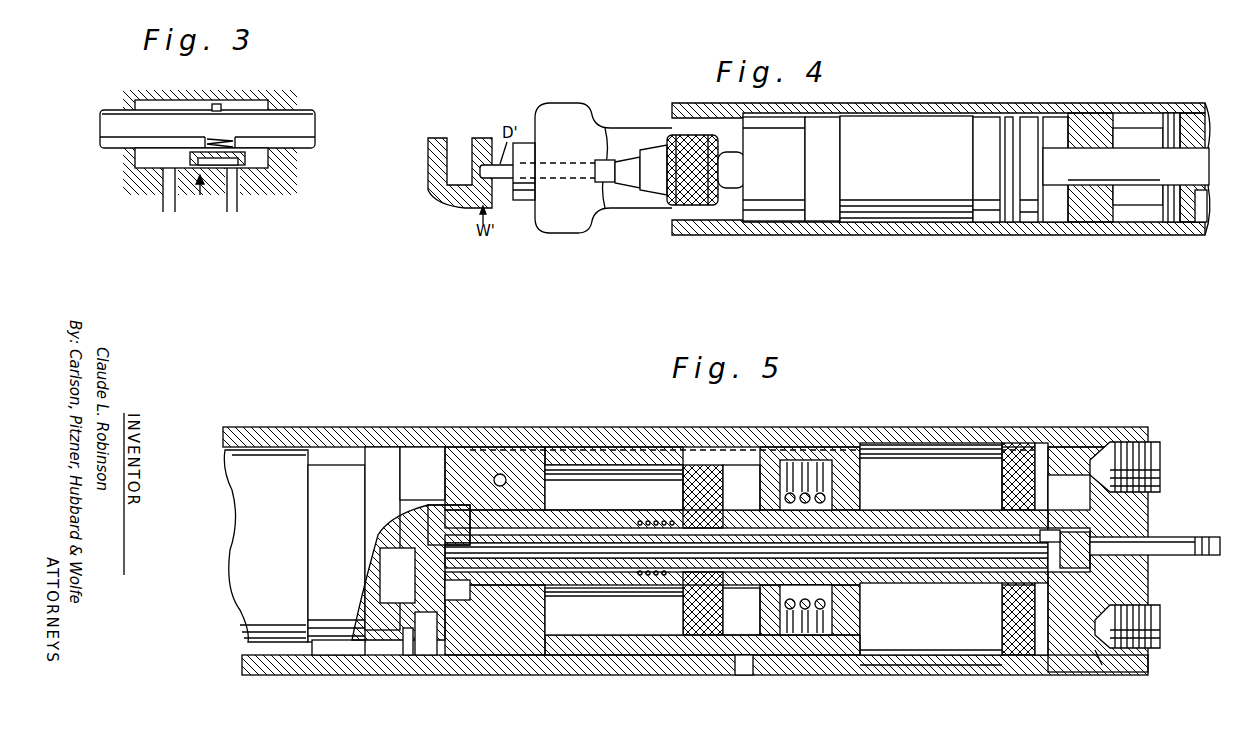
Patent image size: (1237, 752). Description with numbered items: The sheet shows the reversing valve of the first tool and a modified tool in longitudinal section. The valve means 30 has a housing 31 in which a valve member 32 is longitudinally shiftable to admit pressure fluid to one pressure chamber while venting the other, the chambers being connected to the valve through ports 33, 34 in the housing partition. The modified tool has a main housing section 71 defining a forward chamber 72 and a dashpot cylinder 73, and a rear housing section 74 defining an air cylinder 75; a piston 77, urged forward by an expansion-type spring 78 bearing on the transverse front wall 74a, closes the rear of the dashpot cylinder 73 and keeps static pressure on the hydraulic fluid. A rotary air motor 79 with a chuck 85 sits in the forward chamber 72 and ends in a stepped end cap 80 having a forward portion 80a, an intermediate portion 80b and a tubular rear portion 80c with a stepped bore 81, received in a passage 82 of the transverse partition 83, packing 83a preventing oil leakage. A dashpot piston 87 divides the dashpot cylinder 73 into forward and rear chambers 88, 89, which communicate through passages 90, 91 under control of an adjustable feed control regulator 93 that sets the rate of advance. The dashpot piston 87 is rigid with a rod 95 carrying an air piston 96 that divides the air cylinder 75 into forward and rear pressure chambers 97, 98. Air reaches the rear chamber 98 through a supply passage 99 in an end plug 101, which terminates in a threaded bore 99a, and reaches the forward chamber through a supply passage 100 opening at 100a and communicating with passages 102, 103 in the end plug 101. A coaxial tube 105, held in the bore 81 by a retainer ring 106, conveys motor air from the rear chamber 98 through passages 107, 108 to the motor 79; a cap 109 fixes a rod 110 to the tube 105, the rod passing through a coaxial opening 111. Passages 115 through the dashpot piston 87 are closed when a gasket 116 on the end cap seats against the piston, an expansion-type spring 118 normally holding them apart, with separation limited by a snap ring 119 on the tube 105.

In FIG. 3, the valve means 30 is at (195, 100).
In FIG. 3, the housing 31 is at (247, 102).
In FIG. 3, the valve member 32 is at (245, 160).
In FIG. 3, the port 33 is at (163, 200).
In FIG. 3, the port 34 is at (237, 200).
In FIG. 4, the main housing section 71 is at (966, 108).
In FIG. 5, the main housing section 71 is at (422, 442).
In FIG. 4, the forward chamber 72 is at (1062, 116).
In FIG. 5, the forward chamber 72 is at (340, 452).
In FIG. 4, the dashpot cylinder 73 is at (1183, 117).
In FIG. 5, the dashpot cylinder 73 is at (615, 635).
In FIG. 5, the rear housing section 74 is at (988, 430).
In FIG. 5, the transverse front wall 74a is at (864, 484).
In FIG. 5, the air cylinder 75 is at (943, 444).
In FIG. 5, the piston 77 is at (760, 482).
In FIG. 5, the expansion-type spring 78 is at (826, 484).
In FIG. 4, the rotary air motor 79 is at (887, 118).
In FIG. 5, the rotary air motor 79 is at (267, 455).
In FIG. 4, the end cap 80 is at (1011, 220).
In FIG. 5, the end cap 80 is at (414, 655).
In FIG. 5, the forward portion 80a is at (380, 590).
In FIG. 4, the intermediate portion 80b is at (1040, 224).
In FIG. 5, the intermediate portion 80b is at (445, 660).
In FIG. 4, the rear or terminal portion 80c is at (1082, 186).
In FIG. 5, the rear or terminal portion 80c is at (604, 586).
In FIG. 5, the stepped bore 81 is at (575, 538).
In FIG. 5, the passage 82 is at (548, 598).
In FIG. 5, the transverse partition 83 is at (548, 500).
In FIG. 5, the packing 83a is at (569, 614).
In FIG. 4, the chuck 85 is at (668, 138).
In FIG. 4, the dashpot piston 87 is at (1170, 126).
In FIG. 5, the dashpot piston 87 is at (690, 622).
In FIG. 4, the forward chamber 88 is at (1131, 128).
In FIG. 5, the forward chamber 88 is at (583, 620).
In FIG. 4, the rear chamber 89 is at (1199, 206).
In FIG. 5, the rear chamber 89 is at (744, 630).
In FIG. 5, the passage 90 is at (553, 491).
In FIG. 5, the passage 91 is at (585, 448).
In FIG. 5, the feed control regulator 93 is at (495, 474).
In FIG. 4, the rod 95 is at (1198, 162).
In FIG. 5, the rod 95 is at (907, 520).
In FIG. 5, the air piston 96 is at (1002, 484).
In FIG. 5, the forward pressure chamber 97 is at (897, 456).
In FIG. 5, the rear pressure chamber 98 is at (1043, 640).
In FIG. 5, the supply passage 99 is at (1069, 492).
In FIG. 5, the screw-threaded bore 99a is at (1135, 442).
In FIG. 5, the supply passage 100 is at (960, 675).
In FIG. 5, the opening 100a is at (862, 648).
In FIG. 5, the end plug 101 is at (1150, 516).
In FIG. 5, the passage 102 is at (1105, 665).
In FIG. 5, the passage 103 is at (1100, 610).
In FIG. 5, the tube 105 is at (940, 572).
In FIG. 5, the retainer ring 106 is at (458, 532).
In FIG. 5, the passage 107 is at (433, 633).
In FIG. 5, the passage 108 is at (455, 605).
In FIG. 5, the cap 109 is at (1067, 568).
In FIG. 5, the rod 110 is at (1170, 543).
In FIG. 5, the coaxial opening 111 is at (1155, 554).
In FIG. 5, the passages 115 is at (741, 550).
In FIG. 5, the gasket 116 is at (680, 520).
In FIG. 5, the expansion-type spring 118 is at (656, 578).
In FIG. 5, the snap ring 119 is at (1059, 527).